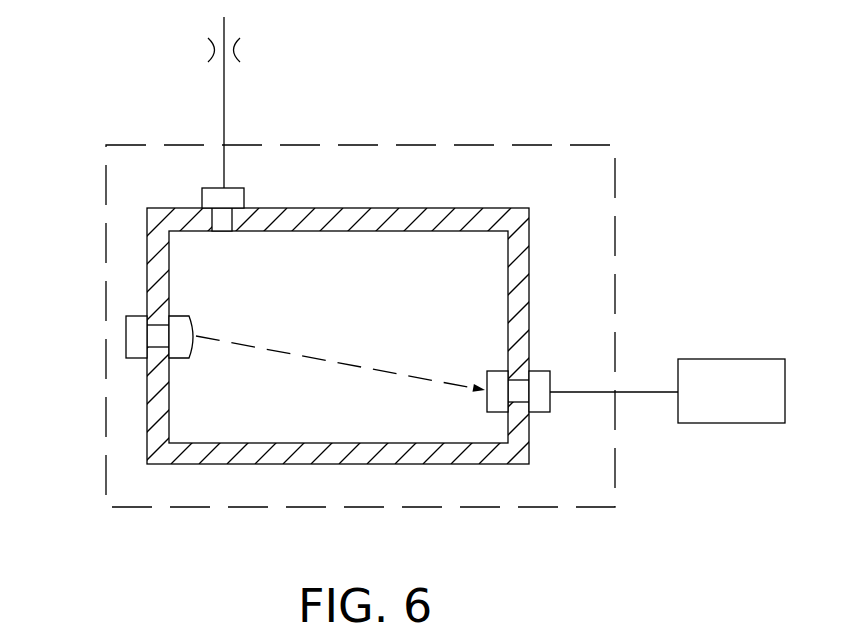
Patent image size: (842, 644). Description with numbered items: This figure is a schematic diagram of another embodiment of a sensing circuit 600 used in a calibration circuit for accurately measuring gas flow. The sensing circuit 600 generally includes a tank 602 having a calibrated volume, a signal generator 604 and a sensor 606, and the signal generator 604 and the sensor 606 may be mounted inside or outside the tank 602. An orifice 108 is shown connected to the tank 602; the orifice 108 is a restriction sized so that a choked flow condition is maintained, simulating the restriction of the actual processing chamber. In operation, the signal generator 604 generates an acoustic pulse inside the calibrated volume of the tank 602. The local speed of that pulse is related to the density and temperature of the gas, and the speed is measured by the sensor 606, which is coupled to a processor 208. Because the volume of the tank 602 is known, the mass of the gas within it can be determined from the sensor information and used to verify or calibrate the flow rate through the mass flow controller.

The orifice 108 is at (190, 53).
The sensing circuit 600 is at (495, 145).
The tank 602 is at (375, 207).
The signal generator 604 is at (150, 387).
The sensor 606 is at (550, 399).
The processor 208 is at (756, 406).